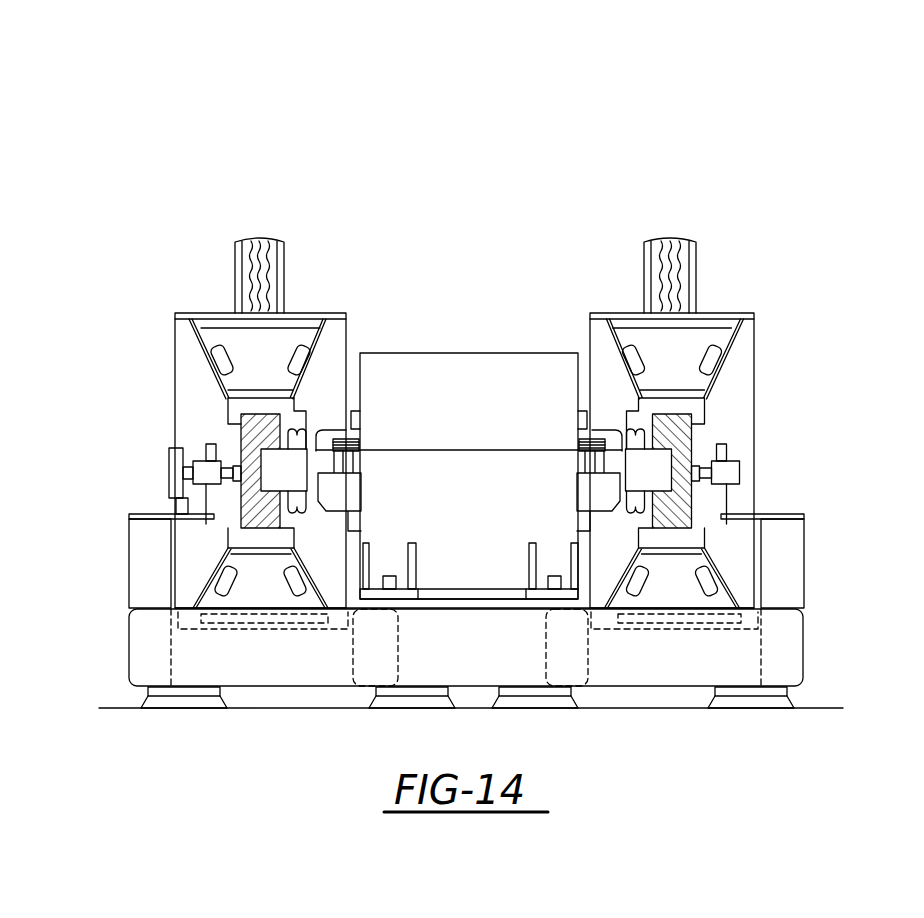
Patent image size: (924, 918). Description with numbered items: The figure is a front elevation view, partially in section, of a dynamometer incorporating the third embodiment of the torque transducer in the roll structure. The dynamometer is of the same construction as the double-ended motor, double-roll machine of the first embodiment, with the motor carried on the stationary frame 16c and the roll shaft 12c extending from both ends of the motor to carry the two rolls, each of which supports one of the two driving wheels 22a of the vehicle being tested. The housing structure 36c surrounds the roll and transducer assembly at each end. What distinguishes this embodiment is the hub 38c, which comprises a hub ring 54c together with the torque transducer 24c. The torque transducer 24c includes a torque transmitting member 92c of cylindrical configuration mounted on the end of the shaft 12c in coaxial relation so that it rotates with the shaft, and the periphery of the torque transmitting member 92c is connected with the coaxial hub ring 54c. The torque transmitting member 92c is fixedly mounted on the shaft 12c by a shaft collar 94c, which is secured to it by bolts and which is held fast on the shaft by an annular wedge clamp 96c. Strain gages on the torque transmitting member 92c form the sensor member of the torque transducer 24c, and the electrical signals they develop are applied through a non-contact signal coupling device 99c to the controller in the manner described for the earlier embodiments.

The shaft 12c is at (600, 482).
The stationary frame 16c is at (128, 647).
The driving wheel 22a is at (283, 265).
The torque transducer 24c is at (710, 433).
The support housing 36c is at (197, 312).
The hub 38c is at (733, 405).
The hub ring 54c is at (720, 393).
The torque transmitting member 92c is at (693, 497).
The shaft collar 94c is at (584, 445).
The annular wedge clamp 96c is at (616, 430).
The non-contact signal coupling device 99c is at (740, 458).